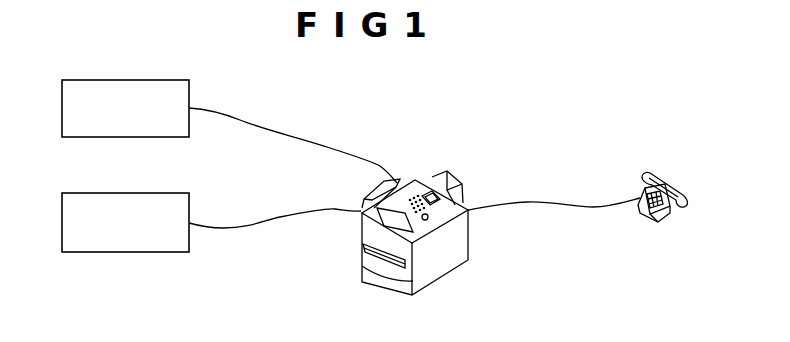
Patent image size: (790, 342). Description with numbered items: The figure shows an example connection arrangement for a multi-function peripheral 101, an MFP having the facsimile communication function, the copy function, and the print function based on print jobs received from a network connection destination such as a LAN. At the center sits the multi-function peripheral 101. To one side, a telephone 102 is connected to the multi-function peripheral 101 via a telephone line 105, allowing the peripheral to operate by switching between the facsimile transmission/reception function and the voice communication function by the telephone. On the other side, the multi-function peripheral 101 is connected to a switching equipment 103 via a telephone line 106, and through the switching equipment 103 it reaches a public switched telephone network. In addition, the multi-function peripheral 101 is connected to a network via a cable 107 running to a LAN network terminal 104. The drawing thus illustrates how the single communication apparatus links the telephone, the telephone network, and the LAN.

The multi-function peripheral 101 is at (420, 180).
The telephone 102 is at (647, 173).
The switching equipment 103 is at (172, 193).
The LAN network terminal 104 is at (173, 80).
The telephone line 105 is at (537, 202).
The telephone line 106 is at (263, 221).
The cable 107 is at (298, 138).